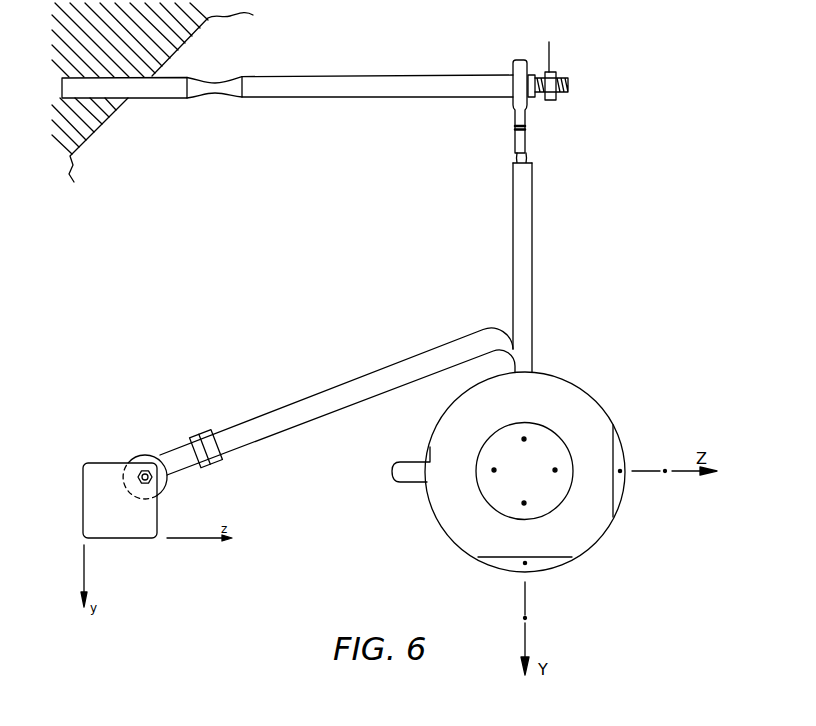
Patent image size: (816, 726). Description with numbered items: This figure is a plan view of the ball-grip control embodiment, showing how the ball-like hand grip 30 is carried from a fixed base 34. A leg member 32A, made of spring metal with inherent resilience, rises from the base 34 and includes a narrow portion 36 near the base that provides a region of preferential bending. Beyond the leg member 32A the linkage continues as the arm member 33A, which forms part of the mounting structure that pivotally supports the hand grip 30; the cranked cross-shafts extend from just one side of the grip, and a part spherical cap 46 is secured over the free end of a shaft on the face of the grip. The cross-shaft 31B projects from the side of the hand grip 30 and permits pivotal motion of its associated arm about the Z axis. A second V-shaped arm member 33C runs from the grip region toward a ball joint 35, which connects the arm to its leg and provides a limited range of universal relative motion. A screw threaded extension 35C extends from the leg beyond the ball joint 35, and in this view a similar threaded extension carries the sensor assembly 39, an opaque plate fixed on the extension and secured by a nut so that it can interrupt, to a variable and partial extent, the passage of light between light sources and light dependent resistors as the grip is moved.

The hand grip 30 is at (568, 368).
The cranked cross-shaft 31B is at (407, 472).
The leg member 32A is at (385, 87).
The arm member 33A is at (518, 189).
The arm member 33C is at (312, 397).
The base 34 is at (183, 45).
The ball joint 35 is at (166, 456).
The screw threaded extension 35C is at (558, 73).
The narrow portion 36 is at (217, 93).
The sensor assembly 39 is at (102, 470).
The part spherical cap 46 is at (502, 487).